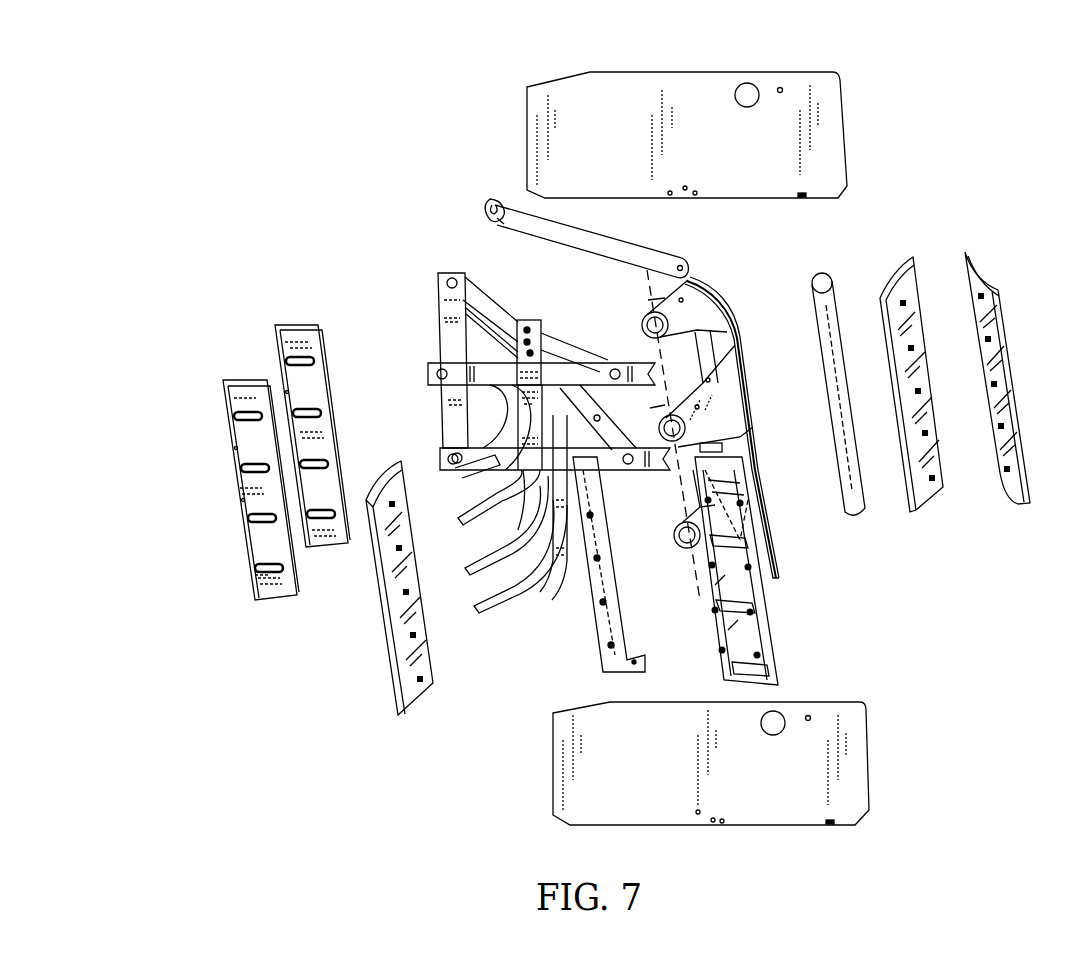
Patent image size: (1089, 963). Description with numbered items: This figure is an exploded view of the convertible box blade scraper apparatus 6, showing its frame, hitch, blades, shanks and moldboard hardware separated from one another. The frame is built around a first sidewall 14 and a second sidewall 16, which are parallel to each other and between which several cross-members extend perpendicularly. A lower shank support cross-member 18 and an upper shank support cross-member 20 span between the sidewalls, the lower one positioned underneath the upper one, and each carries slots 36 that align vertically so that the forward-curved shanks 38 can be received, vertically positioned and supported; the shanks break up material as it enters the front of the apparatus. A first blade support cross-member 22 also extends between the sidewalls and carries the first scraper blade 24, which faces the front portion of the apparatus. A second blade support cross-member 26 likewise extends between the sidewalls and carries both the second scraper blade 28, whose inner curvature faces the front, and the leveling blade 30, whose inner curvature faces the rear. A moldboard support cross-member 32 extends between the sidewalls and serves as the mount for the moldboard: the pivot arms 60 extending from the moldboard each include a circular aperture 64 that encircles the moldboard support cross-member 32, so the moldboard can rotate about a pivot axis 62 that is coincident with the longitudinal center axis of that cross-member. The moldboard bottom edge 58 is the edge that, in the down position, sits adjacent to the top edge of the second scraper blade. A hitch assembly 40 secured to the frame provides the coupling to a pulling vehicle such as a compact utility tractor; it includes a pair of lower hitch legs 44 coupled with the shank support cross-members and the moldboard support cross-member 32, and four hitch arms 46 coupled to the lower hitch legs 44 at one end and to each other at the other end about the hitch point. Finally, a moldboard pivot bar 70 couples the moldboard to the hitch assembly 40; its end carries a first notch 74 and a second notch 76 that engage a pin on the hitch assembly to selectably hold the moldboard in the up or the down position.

The convertible box blade scraper apparatus 6 is at (120, 153).
The first sidewall 14 is at (657, 815).
The second sidewall 16 is at (685, 95).
The lower shank support cross-member 18 is at (237, 397).
The upper shank support cross-member 20 is at (297, 335).
The first blade support cross-member 22 is at (593, 637).
The first scraper blade 24 is at (400, 620).
The second blade support cross-member 26 is at (760, 633).
The second scraper blade 28 is at (927, 490).
The leveling blade 30 is at (985, 283).
The moldboard support cross-member 32 is at (837, 297).
The slots 36 is at (262, 573).
The shanks 38 is at (512, 603).
The hitch assembly 40 is at (432, 318).
The lower hitch legs 44 is at (505, 385).
The hitch arms 46 is at (487, 303).
The moldboard bottom edge 58 is at (753, 383).
The pivot arms 60 is at (695, 305).
The pivot axis 62 is at (698, 590).
The circular aperture 64 is at (652, 310).
The moldboard pivot bar 70 is at (612, 250).
The first notch 74 is at (496, 228).
The second notch 76 is at (492, 200).